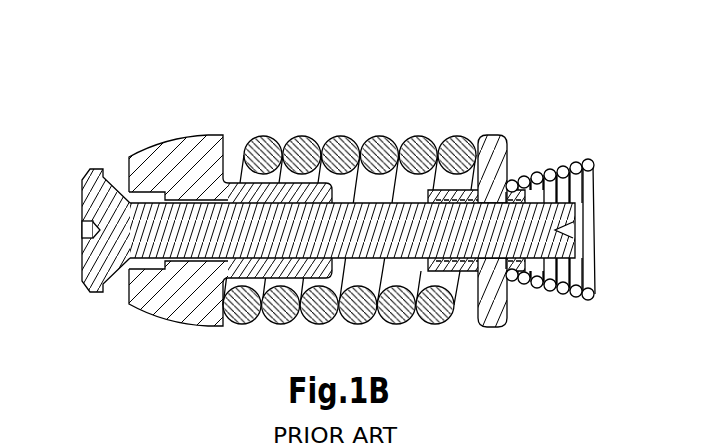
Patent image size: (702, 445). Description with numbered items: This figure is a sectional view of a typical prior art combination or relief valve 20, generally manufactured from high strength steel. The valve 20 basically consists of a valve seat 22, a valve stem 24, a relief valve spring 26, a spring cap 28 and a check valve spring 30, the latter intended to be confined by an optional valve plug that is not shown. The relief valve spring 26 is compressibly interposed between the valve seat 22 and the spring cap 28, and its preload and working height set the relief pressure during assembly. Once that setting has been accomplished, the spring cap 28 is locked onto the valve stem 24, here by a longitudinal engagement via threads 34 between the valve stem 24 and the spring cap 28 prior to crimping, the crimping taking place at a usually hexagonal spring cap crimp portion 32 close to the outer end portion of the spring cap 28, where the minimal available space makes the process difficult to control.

The relief valve 20 is at (316, 75).
The valve seat 22 is at (193, 148).
The valve stem 24 is at (93, 185).
The relief valve spring 26 is at (380, 152).
The spring cap 28 is at (490, 145).
The check valve spring 30 is at (548, 177).
The spring cap crimp portion 32 is at (518, 258).
The threads 34 is at (472, 257).